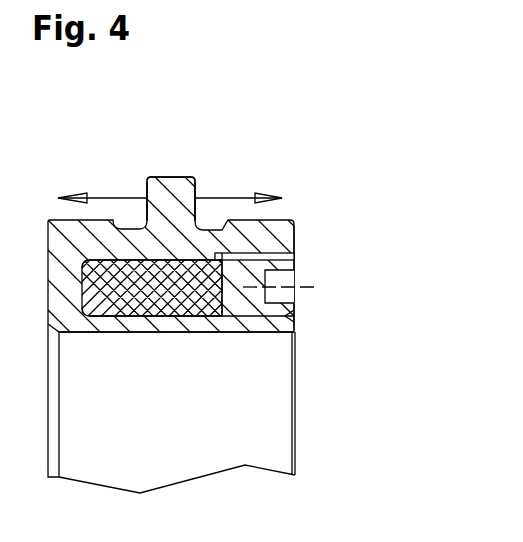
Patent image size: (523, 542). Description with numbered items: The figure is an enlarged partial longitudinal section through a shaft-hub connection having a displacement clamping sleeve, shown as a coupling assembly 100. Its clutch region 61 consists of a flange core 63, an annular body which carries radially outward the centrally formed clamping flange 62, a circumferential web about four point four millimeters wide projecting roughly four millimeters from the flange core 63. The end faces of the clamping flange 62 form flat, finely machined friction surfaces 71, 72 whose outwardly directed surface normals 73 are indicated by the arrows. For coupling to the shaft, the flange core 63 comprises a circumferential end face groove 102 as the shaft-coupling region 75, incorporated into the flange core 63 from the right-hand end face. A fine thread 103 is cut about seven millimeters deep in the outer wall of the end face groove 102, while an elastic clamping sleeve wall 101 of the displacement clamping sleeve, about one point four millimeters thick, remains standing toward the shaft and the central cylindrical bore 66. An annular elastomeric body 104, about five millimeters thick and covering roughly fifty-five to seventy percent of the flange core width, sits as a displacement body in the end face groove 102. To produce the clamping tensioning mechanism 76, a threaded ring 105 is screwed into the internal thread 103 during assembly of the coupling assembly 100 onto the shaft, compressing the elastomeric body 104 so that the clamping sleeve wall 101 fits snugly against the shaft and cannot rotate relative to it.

The clutch region 61 is at (289, 209).
The coupling assembly 100 is at (220, 284).
The clamping tensioning mechanism 76 is at (301, 246).
The fine thread 103 is at (290, 257).
The threaded ring 105 is at (252, 280).
The end face groove 102 is at (260, 315).
The shaft-coupling region 75 is at (301, 340).
The surface normals 73 is at (100, 198).
The friction surface 71 is at (147, 191).
The clamping flange 62 is at (172, 195).
The friction surface 72 is at (195, 192).
The flange core 63 is at (127, 247).
The bore 66 is at (144, 331).
The clamping sleeve wall 101 is at (176, 323).
The elastomeric body 104 is at (193, 297).